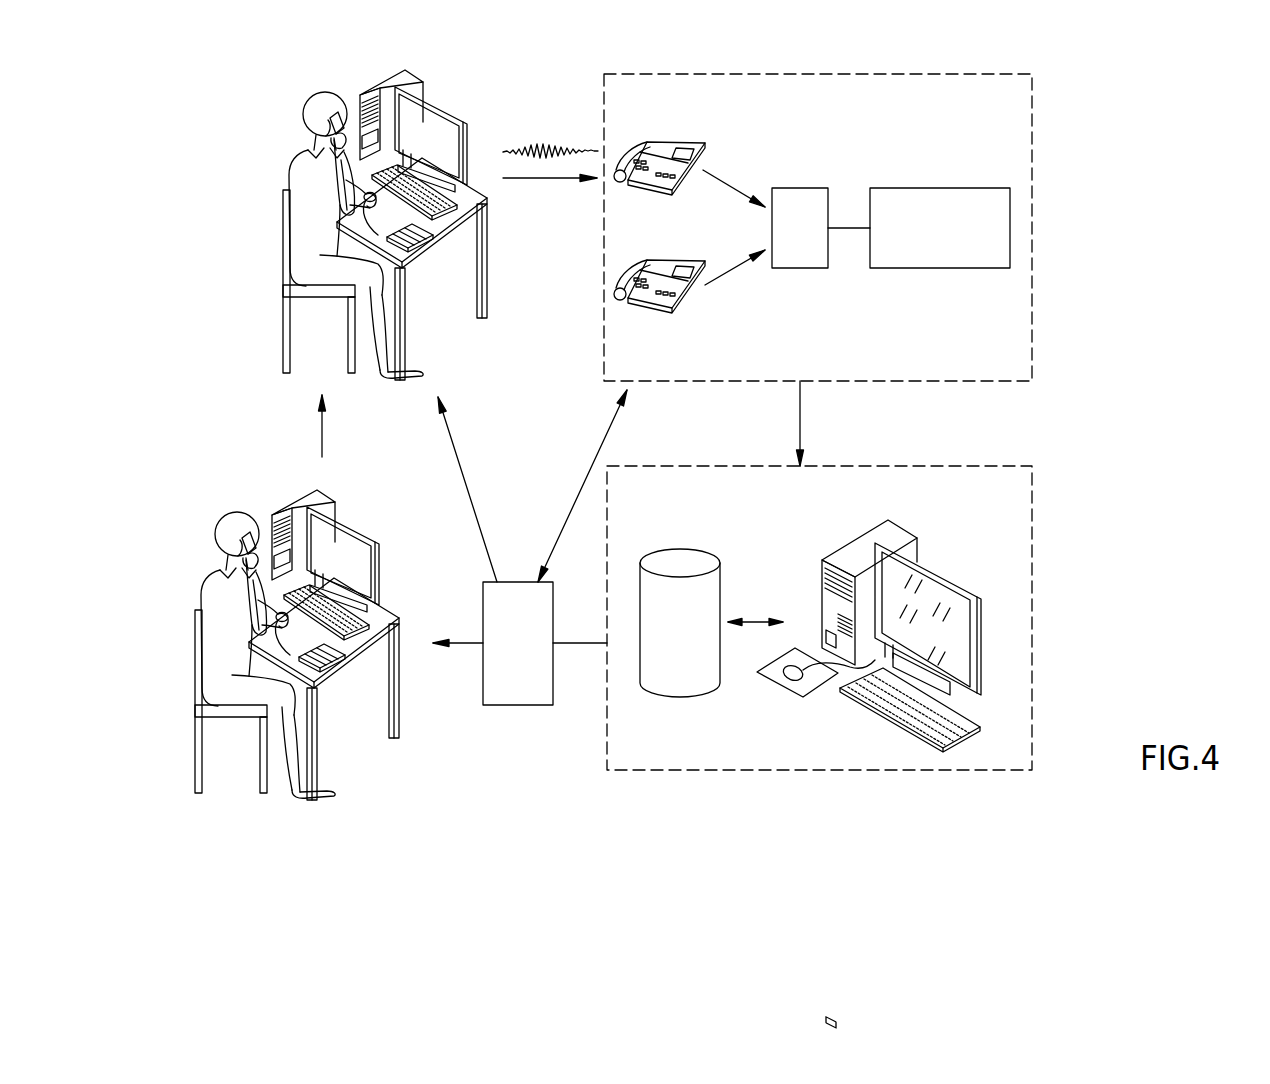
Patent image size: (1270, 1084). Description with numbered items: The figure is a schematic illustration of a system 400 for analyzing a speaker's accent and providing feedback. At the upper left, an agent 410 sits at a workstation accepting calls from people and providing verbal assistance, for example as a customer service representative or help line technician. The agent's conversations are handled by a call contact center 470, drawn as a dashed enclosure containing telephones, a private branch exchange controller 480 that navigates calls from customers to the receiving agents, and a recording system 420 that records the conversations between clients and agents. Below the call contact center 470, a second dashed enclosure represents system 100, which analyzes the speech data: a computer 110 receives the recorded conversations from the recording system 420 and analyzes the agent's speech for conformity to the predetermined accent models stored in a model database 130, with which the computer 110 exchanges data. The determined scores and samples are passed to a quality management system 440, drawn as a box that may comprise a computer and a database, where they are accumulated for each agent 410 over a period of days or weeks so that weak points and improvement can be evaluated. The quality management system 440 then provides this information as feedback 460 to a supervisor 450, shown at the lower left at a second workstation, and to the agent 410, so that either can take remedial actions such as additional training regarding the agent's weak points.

The system 400 is at (1102, 57).
The agent 410 is at (452, 70).
The supervisor 450 is at (357, 478).
The call contact center 470 is at (950, 74).
The private branch exchange (PBX) controller 480 is at (800, 188).
The recording system 420 is at (935, 188).
The system 100 is at (950, 466).
The model database 130 is at (705, 550).
The computer 110 is at (840, 547).
The quality management system 440 is at (516, 582).
The feedback 460 is at (468, 467).